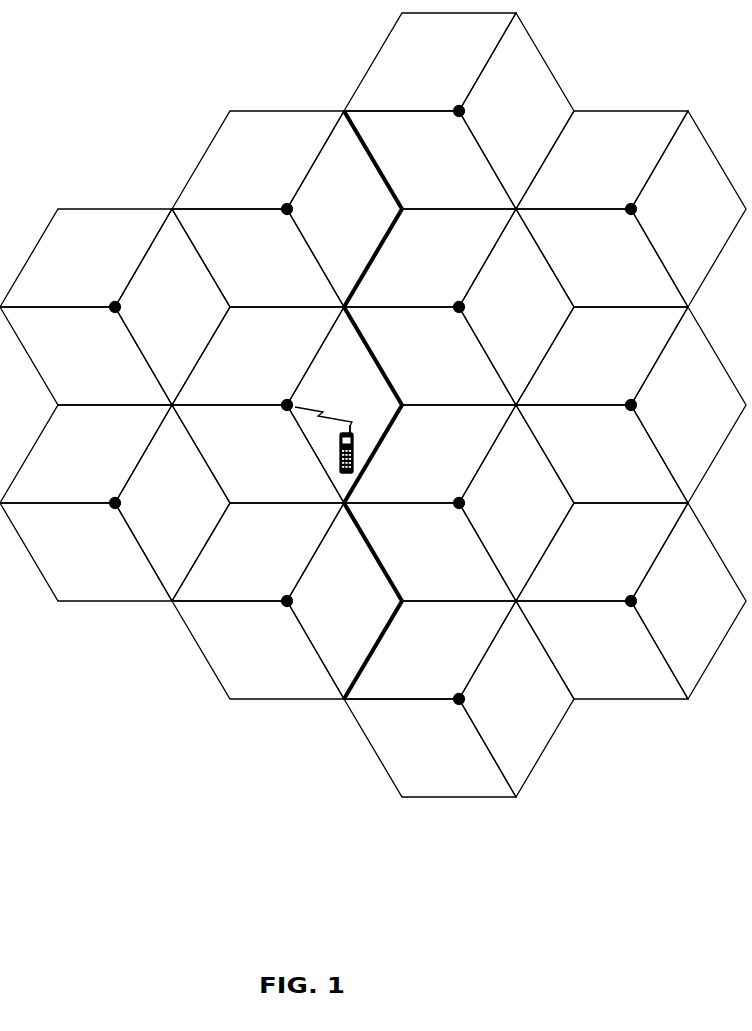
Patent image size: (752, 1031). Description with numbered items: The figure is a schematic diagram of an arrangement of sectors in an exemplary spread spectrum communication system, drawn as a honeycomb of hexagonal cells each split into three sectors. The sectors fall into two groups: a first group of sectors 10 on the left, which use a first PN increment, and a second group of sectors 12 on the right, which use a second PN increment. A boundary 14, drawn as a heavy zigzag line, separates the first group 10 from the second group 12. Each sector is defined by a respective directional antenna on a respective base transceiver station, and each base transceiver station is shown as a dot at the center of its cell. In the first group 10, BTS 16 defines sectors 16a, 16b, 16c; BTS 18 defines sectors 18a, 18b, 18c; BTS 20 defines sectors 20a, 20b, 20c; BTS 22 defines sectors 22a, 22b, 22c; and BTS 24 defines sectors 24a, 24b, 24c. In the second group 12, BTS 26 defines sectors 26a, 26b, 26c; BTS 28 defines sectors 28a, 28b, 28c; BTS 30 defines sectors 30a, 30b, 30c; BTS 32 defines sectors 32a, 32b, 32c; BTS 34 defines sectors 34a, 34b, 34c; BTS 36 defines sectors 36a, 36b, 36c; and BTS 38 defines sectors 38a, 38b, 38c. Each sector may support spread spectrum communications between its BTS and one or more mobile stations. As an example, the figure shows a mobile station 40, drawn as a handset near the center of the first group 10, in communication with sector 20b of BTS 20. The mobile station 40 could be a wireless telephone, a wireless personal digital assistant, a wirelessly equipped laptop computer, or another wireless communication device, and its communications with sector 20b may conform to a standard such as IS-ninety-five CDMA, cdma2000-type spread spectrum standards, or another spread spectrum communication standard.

The first group of sectors 10 is at (201, 435).
The second group of sectors 12 is at (545, 443).
The boundary 14 is at (343, 698).
The base transceiver station 16 is at (287, 209).
The sector 16a is at (260, 163).
The sector 16b is at (325, 221).
The sector 16c is at (237, 269).
The base transceiver station 18 is at (115, 307).
The sector 18a is at (88, 261).
The sector 18b is at (153, 319).
The sector 18c is at (65, 367).
The base transceiver station 20 is at (287, 405).
The sector 20a is at (260, 359).
The sector 20b is at (325, 402).
The sector 20c is at (237, 465).
The base transceiver station 22 is at (115, 503).
The sector 22a is at (88, 457).
The sector 22b is at (153, 515).
The sector 22c is at (65, 563).
The base transceiver station 24 is at (287, 601).
The sector 24a is at (260, 555).
The sector 24b is at (325, 613).
The sector 24c is at (162, 648).
The base transceiver station 26 is at (459, 111).
The sector 26a is at (432, 57).
The sector 26b is at (497, 123).
The sector 26c is at (409, 171).
The base transceiver station 28 is at (631, 209).
The sector 28a is at (604, 155).
The sector 28b is at (669, 221).
The sector 28c is at (581, 269).
The base transceiver station 30 is at (459, 307).
The sector 30a is at (432, 253).
The sector 30b is at (497, 319).
The sector 30c is at (409, 367).
The base transceiver station 32 is at (631, 405).
The sector 32a is at (604, 351).
The sector 32b is at (669, 417).
The sector 32c is at (581, 465).
The base transceiver station 34 is at (459, 503).
The sector 34a is at (432, 449).
The sector 34b is at (497, 515).
The sector 34c is at (409, 563).
The base transceiver station 36 is at (631, 601).
The sector 36a is at (604, 547).
The sector 36b is at (669, 613).
The sector 36c is at (581, 661).
The base transceiver station 38 is at (459, 699).
The sector 38a is at (432, 645).
The sector 38b is at (497, 711).
The sector 38c is at (409, 759).
The mobile station 40 is at (337, 455).